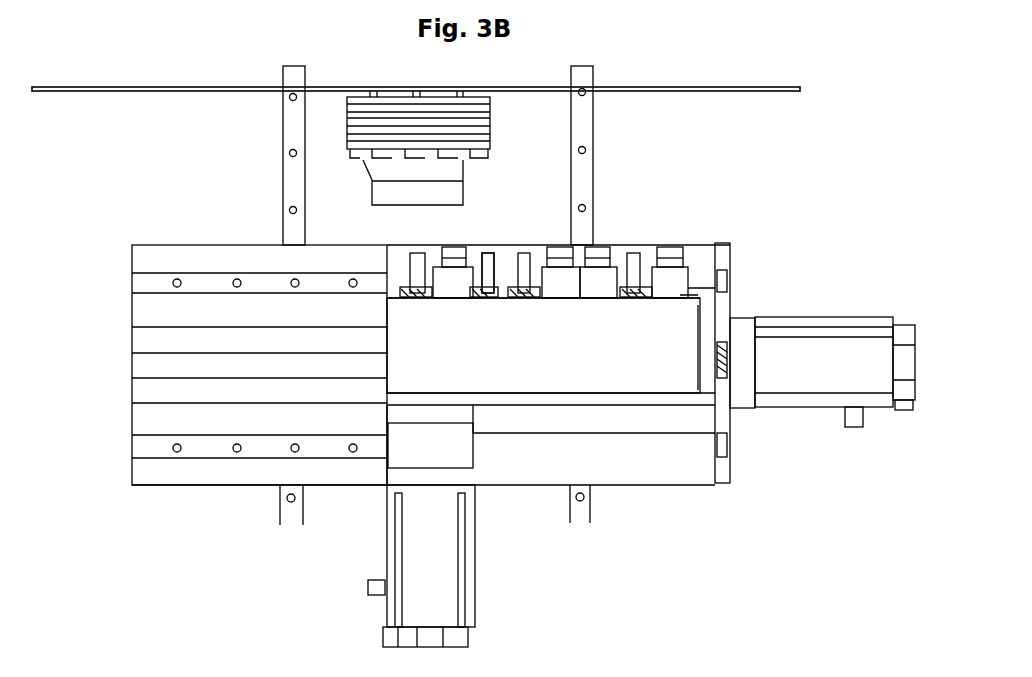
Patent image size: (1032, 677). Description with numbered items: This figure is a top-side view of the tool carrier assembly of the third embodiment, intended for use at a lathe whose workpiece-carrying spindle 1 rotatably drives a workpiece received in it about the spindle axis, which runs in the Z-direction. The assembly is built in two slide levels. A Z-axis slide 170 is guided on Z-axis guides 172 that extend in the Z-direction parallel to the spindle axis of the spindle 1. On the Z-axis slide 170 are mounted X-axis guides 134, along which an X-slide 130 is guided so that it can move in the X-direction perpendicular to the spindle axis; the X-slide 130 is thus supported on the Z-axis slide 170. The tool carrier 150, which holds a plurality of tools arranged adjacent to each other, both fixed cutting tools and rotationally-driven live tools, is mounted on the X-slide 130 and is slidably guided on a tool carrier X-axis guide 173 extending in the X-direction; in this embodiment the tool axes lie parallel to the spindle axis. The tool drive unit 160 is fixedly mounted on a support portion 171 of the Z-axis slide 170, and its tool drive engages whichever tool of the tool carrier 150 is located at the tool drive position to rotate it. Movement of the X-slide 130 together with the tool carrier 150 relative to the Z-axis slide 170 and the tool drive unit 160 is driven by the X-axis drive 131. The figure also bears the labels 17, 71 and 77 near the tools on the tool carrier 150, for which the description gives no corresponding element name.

The workpiece-carrying spindle 1 is at (465, 170).
The tool holder 17 is at (600, 243).
The tool 71 is at (527, 244).
The tool 77 is at (415, 246).
The support portion 171 is at (440, 244).
The X-slide 130 is at (702, 258).
The X-axis drive 131 is at (812, 325).
The X-axis guides 134 is at (138, 450).
The tool carrier 150 is at (656, 350).
The tool drive unit 160 is at (442, 582).
The Z-axis slide 170 is at (215, 470).
The Z-axis guides 172 is at (295, 520).
The tool carrier X-axis guide 173 is at (628, 405).